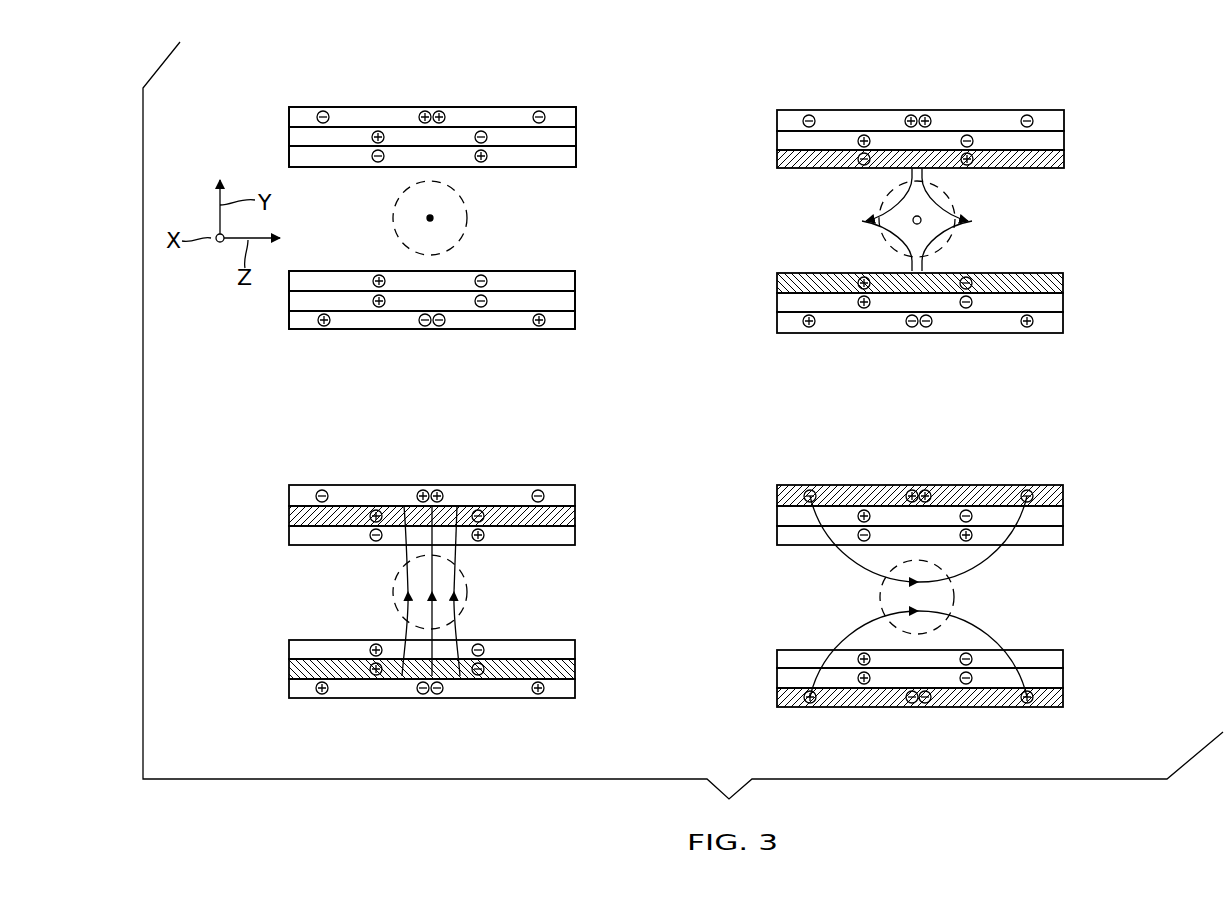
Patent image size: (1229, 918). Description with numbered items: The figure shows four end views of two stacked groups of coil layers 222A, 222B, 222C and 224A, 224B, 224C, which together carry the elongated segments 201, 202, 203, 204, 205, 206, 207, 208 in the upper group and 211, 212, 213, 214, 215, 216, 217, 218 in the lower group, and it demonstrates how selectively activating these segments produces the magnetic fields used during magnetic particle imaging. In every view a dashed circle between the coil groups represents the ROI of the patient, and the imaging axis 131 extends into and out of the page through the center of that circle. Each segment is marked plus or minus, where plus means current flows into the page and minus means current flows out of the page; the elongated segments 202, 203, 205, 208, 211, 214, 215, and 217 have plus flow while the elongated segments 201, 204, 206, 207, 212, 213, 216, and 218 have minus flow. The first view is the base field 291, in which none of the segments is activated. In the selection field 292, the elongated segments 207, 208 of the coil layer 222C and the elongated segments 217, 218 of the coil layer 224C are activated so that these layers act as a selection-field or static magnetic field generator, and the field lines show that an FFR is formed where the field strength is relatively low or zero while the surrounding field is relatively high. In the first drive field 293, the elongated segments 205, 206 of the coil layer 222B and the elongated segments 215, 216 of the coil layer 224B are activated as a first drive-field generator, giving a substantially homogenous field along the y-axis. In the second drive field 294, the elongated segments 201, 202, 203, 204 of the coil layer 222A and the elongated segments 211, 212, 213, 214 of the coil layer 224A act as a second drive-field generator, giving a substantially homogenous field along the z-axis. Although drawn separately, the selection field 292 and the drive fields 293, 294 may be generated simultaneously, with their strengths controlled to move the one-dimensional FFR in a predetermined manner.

The imaging axis 131 is at (432, 217).
The elongated segment 201 is at (323, 110).
The elongated segment 202 is at (425, 110).
The elongated segment 203 is at (440, 110).
The elongated segment 204 is at (541, 110).
The elongated segment 205 is at (377, 130).
The elongated segment 206 is at (482, 130).
The elongated segment 207 is at (378, 163).
The elongated segment 208 is at (481, 163).
The elongated segment 211 is at (324, 327).
The elongated segment 212 is at (425, 327).
The elongated segment 213 is at (439, 327).
The elongated segment 214 is at (539, 327).
The elongated segment 215 is at (379, 308).
The elongated segment 216 is at (481, 308).
The elongated segment 217 is at (379, 274).
The elongated segment 218 is at (483, 274).
The coil layer 222A is at (576, 117).
The coil layer 222B is at (576, 137).
The coil layer 222C is at (576, 157).
The coil layer 224A is at (575, 318).
The coil layer 224B is at (575, 298).
The coil layer 224C is at (575, 278).
The base field 291 is at (592, 96).
The selection field 292 is at (1064, 96).
The first drive field 293 is at (570, 472).
The second drive field 294 is at (1082, 469).
The region of interest ROI is at (464, 235).
The field-free region FFR is at (906, 214).